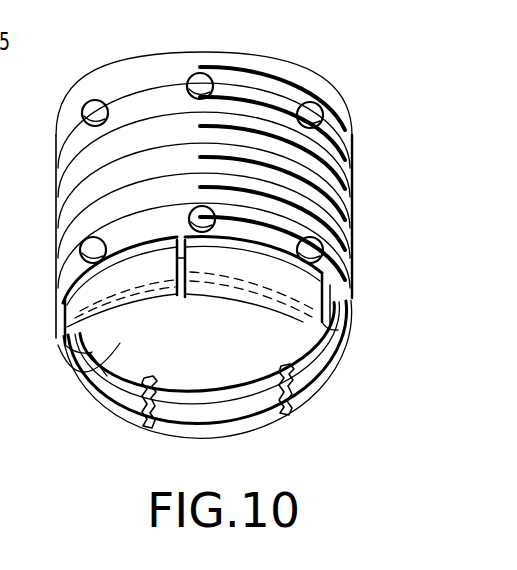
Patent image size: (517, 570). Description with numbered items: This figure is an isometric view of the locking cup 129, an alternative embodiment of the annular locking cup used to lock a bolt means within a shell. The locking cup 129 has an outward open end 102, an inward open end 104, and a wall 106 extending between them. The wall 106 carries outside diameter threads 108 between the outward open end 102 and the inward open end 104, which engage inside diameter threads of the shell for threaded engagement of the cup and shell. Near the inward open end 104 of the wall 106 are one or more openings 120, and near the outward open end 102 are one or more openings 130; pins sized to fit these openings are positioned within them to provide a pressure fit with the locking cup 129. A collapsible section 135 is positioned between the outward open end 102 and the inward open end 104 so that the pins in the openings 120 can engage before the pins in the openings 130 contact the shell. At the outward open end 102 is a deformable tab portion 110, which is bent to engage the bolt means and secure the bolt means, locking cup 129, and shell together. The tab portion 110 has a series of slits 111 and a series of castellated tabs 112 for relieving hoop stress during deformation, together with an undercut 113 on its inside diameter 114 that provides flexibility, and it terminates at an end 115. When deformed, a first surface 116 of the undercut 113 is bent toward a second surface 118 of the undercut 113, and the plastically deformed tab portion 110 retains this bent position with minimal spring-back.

The outward open end 102 is at (352, 280).
The inward open end 104 is at (353, 137).
The wall 106 is at (55, 205).
The outside diameter threads 108 is at (352, 168).
The tab portion 110 is at (343, 365).
The slits 111 is at (284, 412).
The castellated tabs 112 is at (253, 427).
The undercut 113 is at (168, 398).
The inside diameter 114 is at (85, 384).
The end 115 is at (100, 403).
The first surface 116 is at (228, 403).
The second surface 118 is at (206, 405).
The openings 120 is at (313, 103).
The locking cup 129 is at (187, 52).
The openings 130 is at (96, 236).
The collapsible section 135 is at (352, 222).